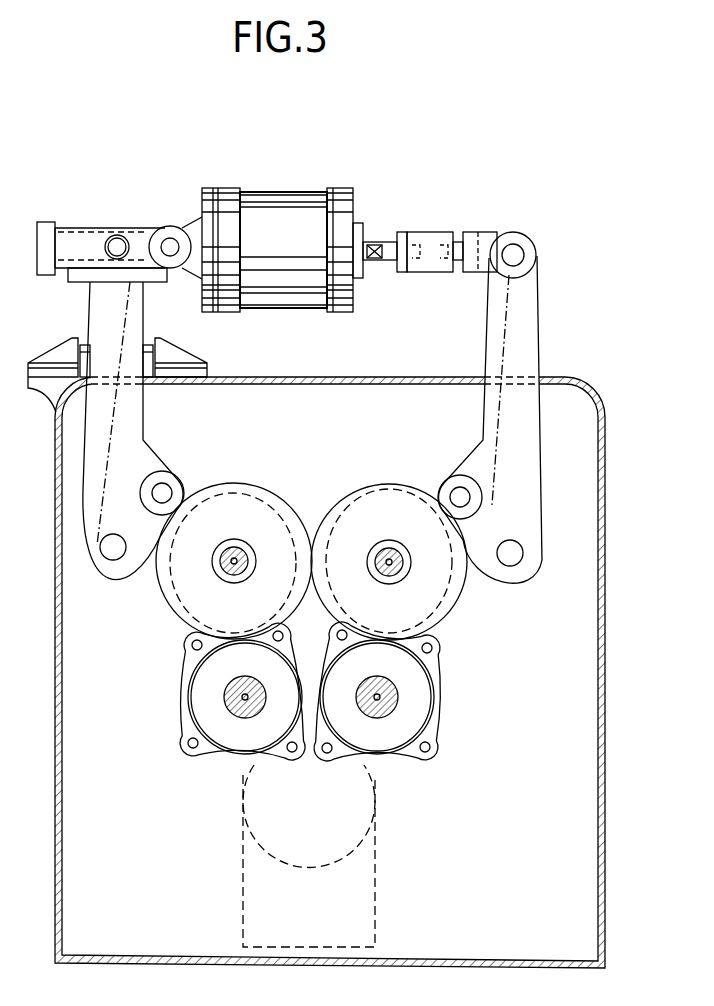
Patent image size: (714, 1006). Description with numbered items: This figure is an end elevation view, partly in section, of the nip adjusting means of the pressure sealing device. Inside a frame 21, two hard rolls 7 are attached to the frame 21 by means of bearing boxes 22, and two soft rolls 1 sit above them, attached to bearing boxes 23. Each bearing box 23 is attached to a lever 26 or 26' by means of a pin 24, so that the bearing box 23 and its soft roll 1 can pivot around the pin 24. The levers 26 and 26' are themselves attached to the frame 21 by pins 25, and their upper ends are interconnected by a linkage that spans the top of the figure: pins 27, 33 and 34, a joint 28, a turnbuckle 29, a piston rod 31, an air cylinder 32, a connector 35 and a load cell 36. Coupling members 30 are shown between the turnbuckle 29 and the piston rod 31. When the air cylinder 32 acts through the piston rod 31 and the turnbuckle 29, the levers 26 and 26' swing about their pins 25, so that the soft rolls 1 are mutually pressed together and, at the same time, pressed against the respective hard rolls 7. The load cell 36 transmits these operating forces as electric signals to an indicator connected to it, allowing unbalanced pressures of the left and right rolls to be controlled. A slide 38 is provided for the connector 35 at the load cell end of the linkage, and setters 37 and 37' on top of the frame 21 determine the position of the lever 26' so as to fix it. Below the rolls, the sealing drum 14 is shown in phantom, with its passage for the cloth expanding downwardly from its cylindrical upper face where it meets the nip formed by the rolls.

The soft roll 1 is at (447, 604).
The hard roll 7 is at (431, 715).
The sealing drum 14 is at (378, 866).
The frame 21 is at (606, 658).
The bearing box 22 is at (440, 742).
The bearing box 23 is at (397, 498).
The pin 24 is at (455, 492).
The pin 25 is at (518, 561).
The lever 26 is at (507, 419).
The lever 26' is at (102, 431).
The pin 27 is at (514, 243).
The joint 28 is at (475, 232).
The turnbuckle 29 is at (425, 232).
The coupling ring 30 is at (401, 233).
The piston rod 31 is at (377, 242).
The pneumatic cylinder 32 is at (275, 200).
The pin 33 is at (170, 237).
The pin 34 is at (134, 236).
The connector 35 is at (92, 228).
The load cell 36 is at (83, 238).
The setter 37 is at (175, 345).
The setter 37' is at (59, 363).
The slide 38 is at (75, 282).